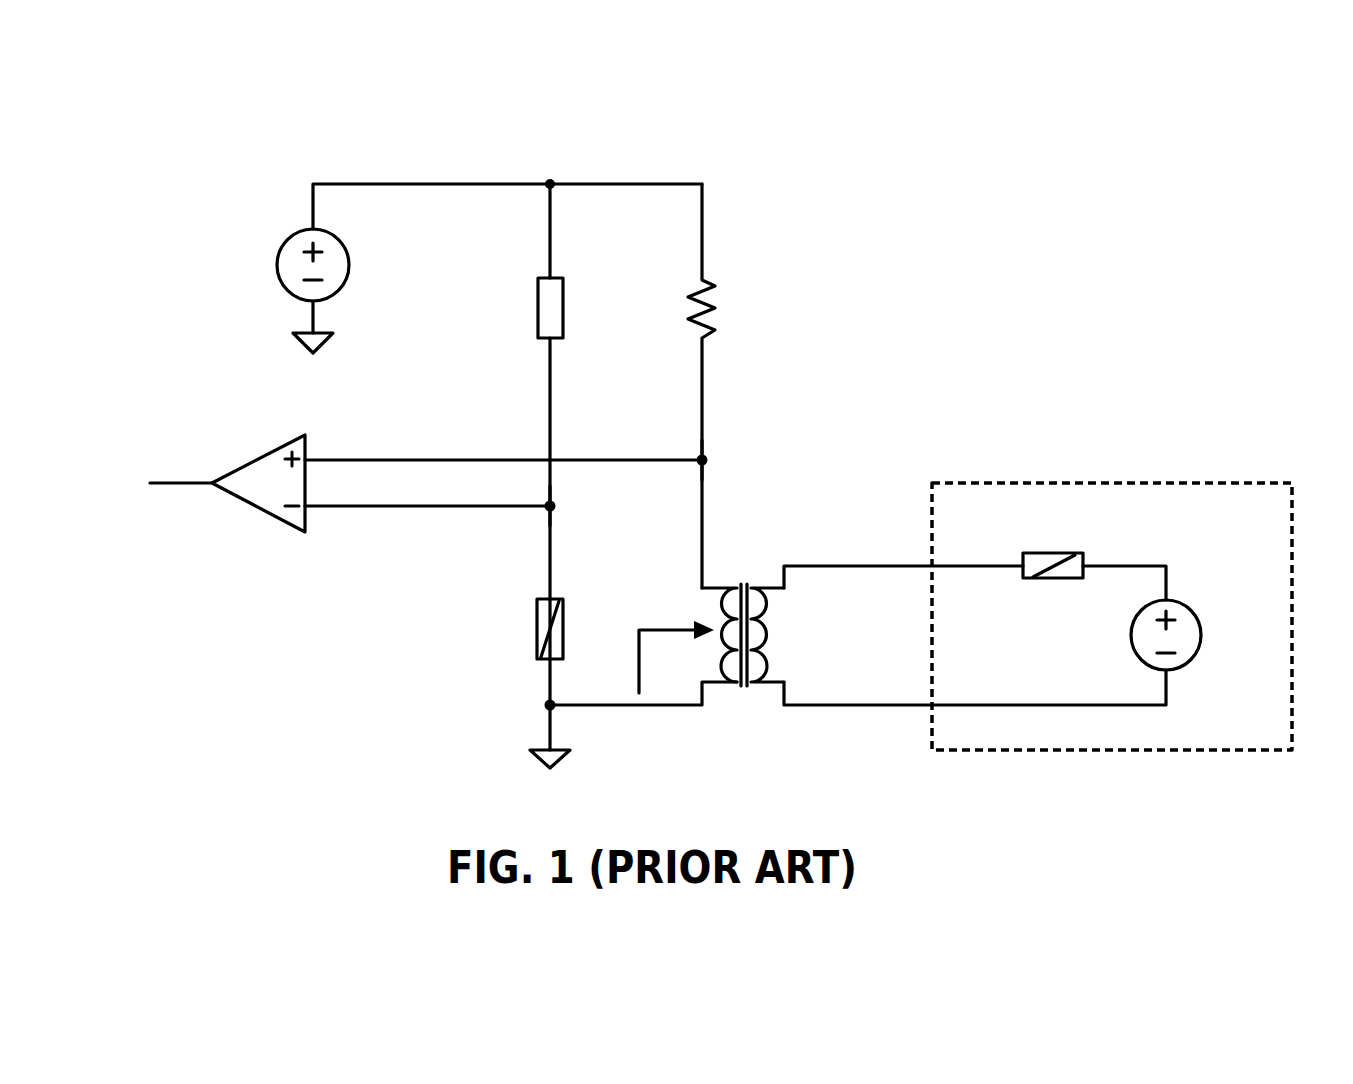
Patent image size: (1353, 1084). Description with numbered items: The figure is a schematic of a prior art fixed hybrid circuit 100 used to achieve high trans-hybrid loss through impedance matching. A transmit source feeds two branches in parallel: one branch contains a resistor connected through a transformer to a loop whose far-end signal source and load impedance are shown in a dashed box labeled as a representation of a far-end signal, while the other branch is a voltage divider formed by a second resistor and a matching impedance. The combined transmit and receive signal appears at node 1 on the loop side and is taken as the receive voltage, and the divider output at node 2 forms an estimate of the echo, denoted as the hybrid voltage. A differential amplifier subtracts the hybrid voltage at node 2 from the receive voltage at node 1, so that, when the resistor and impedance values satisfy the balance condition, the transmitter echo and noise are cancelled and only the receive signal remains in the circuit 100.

The hybrid circuit 100 is at (1000, 185).
The node 1 (receive signal node) 1 is at (727, 442).
The node 2 (hybrid signal node) 2 is at (575, 501).